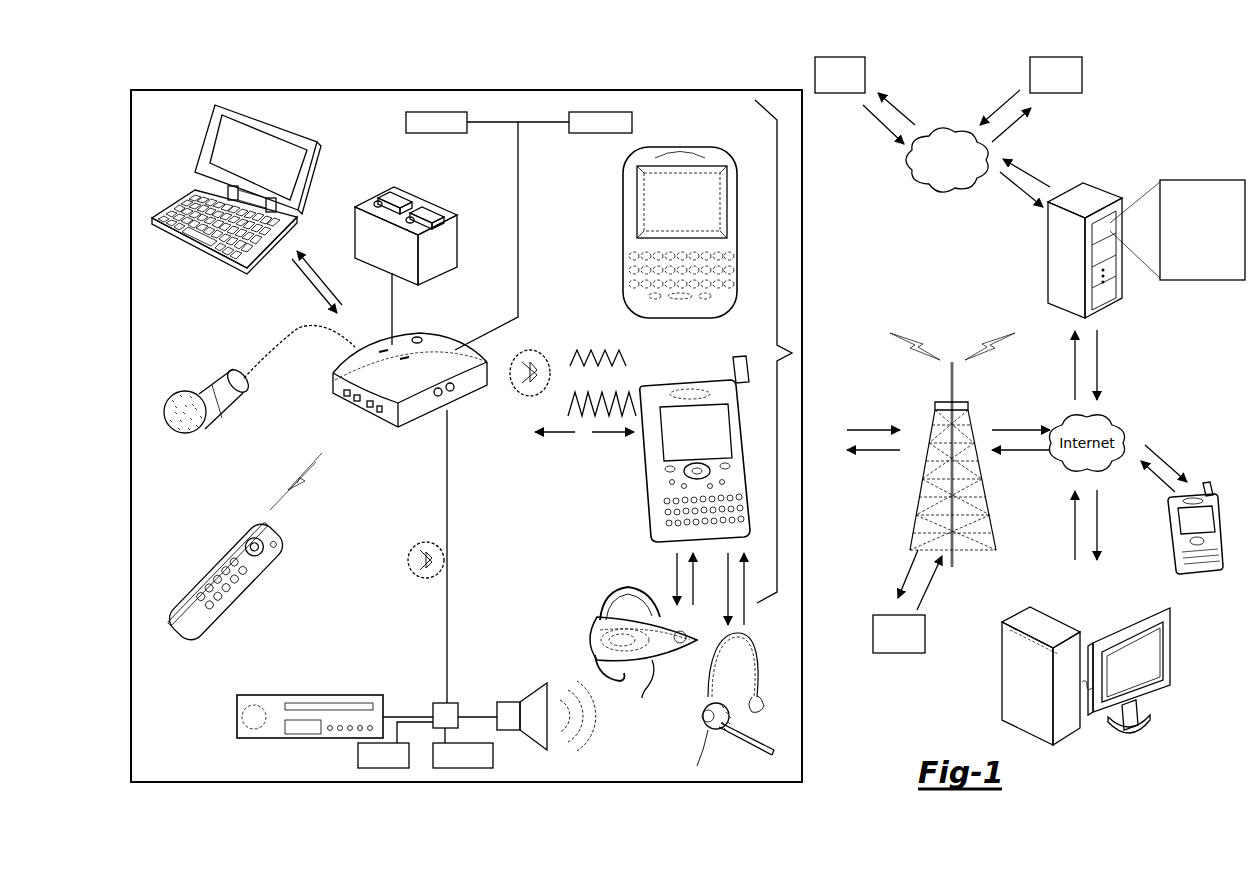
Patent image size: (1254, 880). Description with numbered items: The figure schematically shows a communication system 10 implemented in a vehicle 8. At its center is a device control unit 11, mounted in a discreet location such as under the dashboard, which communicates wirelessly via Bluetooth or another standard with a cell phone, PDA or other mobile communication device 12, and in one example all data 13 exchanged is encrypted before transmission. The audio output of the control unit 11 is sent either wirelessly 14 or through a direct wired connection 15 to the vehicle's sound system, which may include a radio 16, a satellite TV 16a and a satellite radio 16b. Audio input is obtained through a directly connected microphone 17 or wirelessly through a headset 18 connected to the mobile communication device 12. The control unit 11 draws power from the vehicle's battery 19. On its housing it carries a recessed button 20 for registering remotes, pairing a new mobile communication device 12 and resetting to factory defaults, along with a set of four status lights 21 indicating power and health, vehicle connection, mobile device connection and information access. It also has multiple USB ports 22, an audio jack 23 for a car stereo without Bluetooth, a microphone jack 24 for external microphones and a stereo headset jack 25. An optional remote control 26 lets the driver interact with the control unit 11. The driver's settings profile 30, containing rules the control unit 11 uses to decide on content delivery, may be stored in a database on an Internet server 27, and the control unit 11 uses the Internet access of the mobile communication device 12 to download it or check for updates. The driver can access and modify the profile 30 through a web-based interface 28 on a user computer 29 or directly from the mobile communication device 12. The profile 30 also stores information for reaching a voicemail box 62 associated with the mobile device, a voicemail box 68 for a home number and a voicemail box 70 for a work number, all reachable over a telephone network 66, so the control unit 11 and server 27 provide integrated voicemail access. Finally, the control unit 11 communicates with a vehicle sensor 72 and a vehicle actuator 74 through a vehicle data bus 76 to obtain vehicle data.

The vehicle 8 is at (131, 238).
The communication system 10 is at (122, 178).
The device control unit 11 is at (406, 430).
The mobile communication device 12 is at (662, 318).
The data 13 is at (592, 352).
The wireless transmission 14 is at (408, 560).
The wired connection 15 is at (447, 614).
The radio 16 is at (237, 720).
The satellite TV 16a is at (358, 754).
The satellite radio 16b is at (493, 755).
The microphone 17 is at (205, 378).
The headset 18 is at (696, 722).
The battery 19 is at (448, 247).
The recessed button 20 is at (419, 337).
The status lights 21 is at (383, 350).
The USB ports 22 is at (344, 393).
The audio jack 23 is at (354, 398).
The microphone jack 24 is at (368, 405).
The stereo headset jack 25 is at (378, 411).
The remote control 26 is at (217, 619).
The Internet server 27 is at (1055, 270).
The web-based interface 28 is at (1152, 666).
The user computer 29 is at (1002, 690).
The settings profile 30 is at (1205, 282).
The voicemail box 62 is at (898, 653).
The telephone network 66 is at (913, 190).
The voicemail box 68 is at (865, 75).
The voicemail box 70 is at (1082, 75).
The vehicle sensor 72 is at (406, 122).
The vehicle actuator 74 is at (632, 122).
The vehicle data bus 76 is at (518, 215).